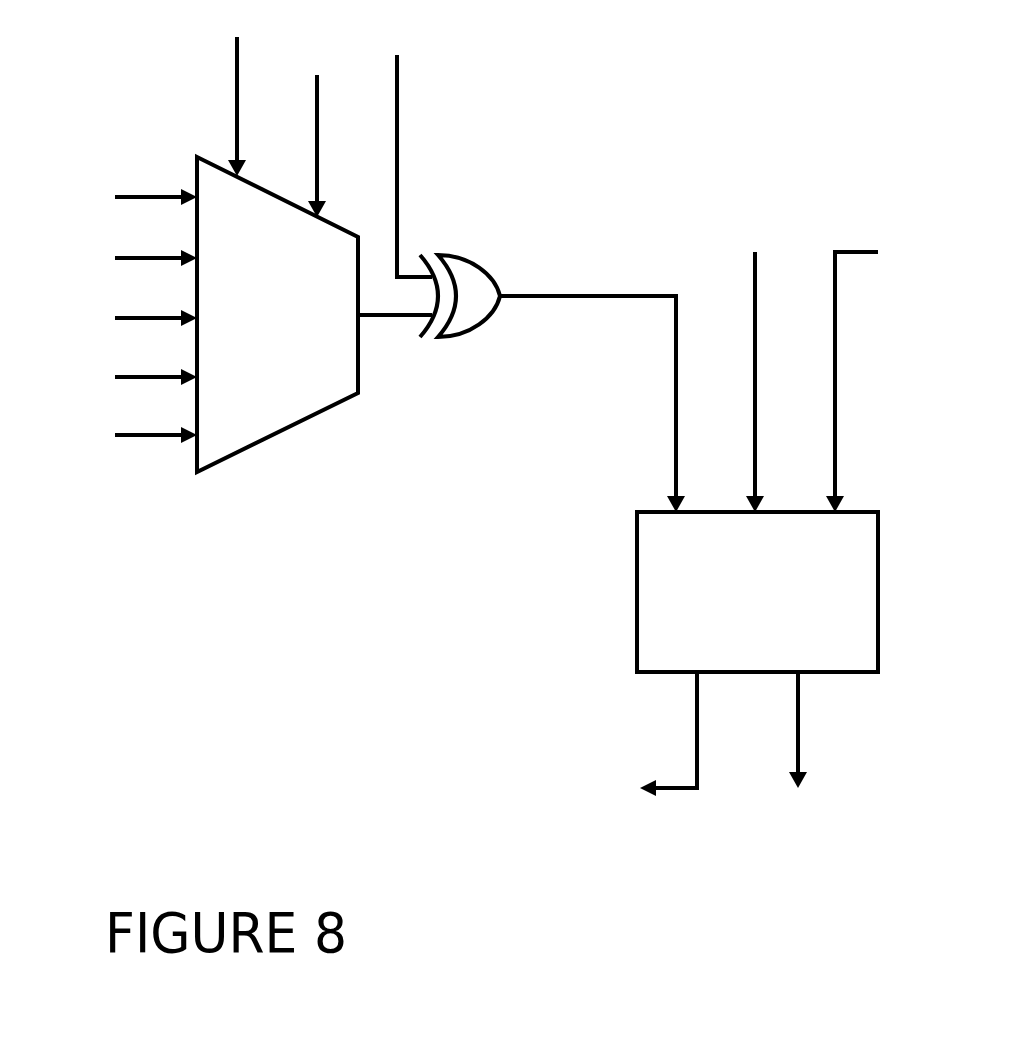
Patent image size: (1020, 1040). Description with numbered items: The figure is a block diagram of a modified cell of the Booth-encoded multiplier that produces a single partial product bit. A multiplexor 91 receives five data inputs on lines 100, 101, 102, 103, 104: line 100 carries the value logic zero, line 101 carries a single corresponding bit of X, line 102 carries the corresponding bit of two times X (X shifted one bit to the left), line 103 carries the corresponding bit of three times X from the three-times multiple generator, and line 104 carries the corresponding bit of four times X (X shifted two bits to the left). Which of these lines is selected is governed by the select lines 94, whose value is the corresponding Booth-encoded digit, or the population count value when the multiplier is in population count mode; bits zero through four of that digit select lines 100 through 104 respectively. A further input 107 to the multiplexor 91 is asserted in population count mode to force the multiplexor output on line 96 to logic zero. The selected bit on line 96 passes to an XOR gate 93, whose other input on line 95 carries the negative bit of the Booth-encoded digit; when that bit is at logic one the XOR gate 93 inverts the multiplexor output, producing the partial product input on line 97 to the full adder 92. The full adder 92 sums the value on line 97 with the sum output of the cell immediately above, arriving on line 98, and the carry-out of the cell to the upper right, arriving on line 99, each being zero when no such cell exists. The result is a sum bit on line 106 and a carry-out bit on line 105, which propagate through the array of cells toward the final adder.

The multiplexor 91 is at (196, 473).
The full adder 92 is at (655, 673).
The XOR gate 93 is at (480, 270).
The select lines 94 is at (237, 63).
The negative bit line 95 is at (397, 73).
The multiplexor output line 96 is at (401, 318).
The XOR output line 97 is at (612, 298).
The sum input line 98 is at (755, 260).
The carry input line 99 is at (860, 254).
The logic zero line 100 is at (135, 199).
The X bit line 101 is at (135, 260).
The two times X bit line 102 is at (135, 320).
The three times X bit line 103 is at (135, 379).
The four times X bit line 104 is at (135, 437).
The carry-out line 105 is at (672, 790).
The sum output line 106 is at (798, 715).
The zero-forcing input 107 is at (317, 92).